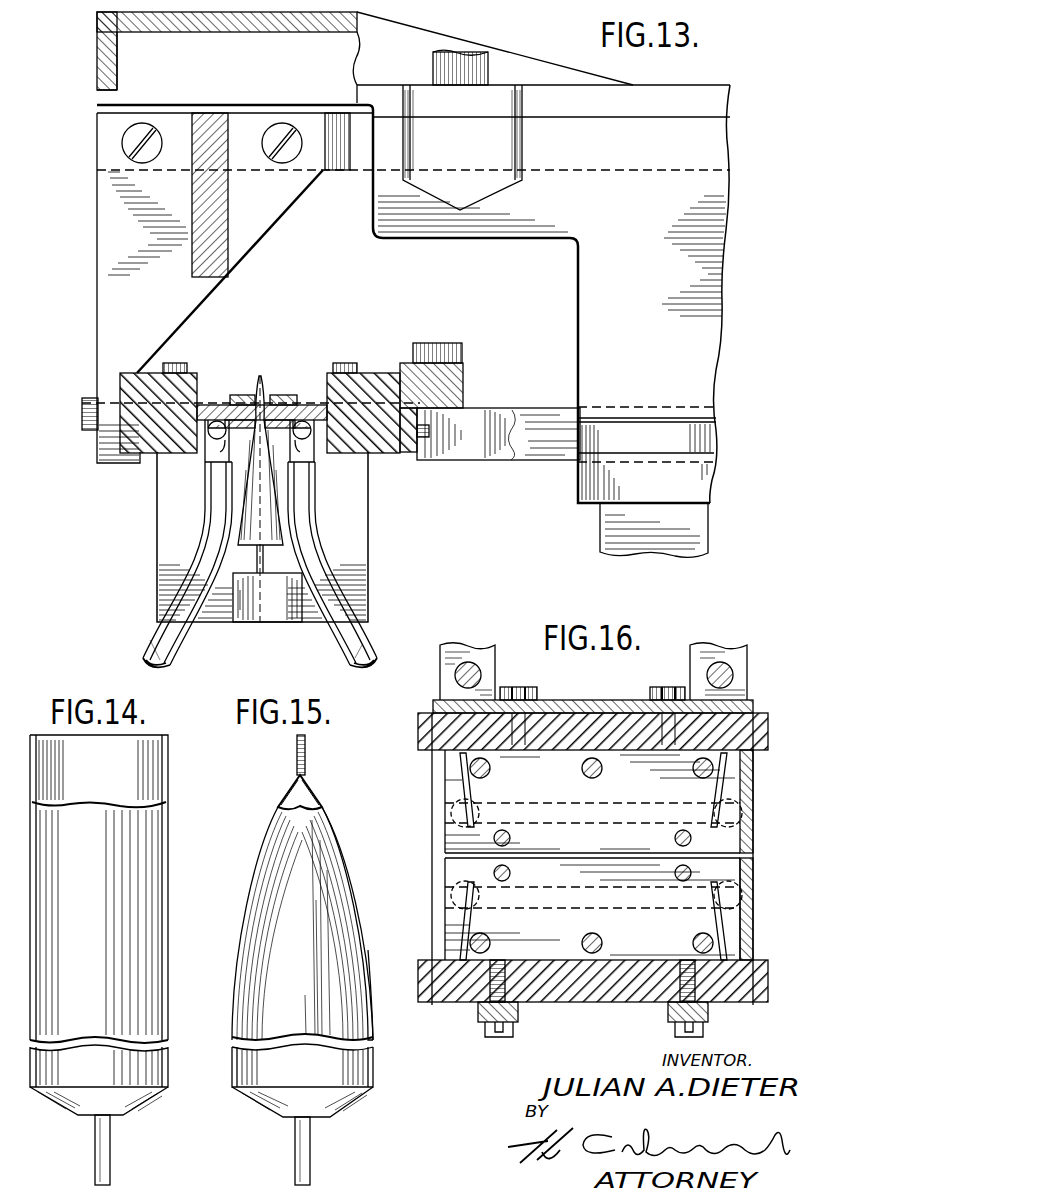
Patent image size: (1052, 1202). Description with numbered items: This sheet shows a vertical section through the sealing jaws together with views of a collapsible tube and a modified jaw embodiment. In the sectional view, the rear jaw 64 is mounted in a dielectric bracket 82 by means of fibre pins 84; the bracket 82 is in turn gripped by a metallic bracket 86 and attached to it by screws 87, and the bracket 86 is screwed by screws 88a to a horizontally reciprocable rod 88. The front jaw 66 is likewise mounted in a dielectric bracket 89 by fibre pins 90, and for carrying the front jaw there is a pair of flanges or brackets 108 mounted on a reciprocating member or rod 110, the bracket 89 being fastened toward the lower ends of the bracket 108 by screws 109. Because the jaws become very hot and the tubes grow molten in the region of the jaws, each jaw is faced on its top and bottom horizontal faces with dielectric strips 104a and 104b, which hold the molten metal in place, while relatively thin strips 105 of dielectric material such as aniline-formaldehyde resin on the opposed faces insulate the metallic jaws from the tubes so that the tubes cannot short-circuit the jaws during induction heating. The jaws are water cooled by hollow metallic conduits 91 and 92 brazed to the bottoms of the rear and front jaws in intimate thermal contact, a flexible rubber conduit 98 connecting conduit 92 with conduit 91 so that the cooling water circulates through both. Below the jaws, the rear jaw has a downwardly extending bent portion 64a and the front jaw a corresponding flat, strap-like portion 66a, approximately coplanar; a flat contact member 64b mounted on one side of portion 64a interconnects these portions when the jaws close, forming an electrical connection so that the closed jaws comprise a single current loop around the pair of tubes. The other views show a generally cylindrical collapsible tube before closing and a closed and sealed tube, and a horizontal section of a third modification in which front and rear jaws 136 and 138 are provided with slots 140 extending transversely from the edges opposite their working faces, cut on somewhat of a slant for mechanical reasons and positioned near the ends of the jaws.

In FIG. 13, the flanges or brackets 108 is at (107, 281).
In FIG. 13, the reciprocating member or rod 110 is at (338, 172).
In FIG. 13, the screws 109 is at (90, 398).
In FIG. 13, the dielectric bracket 89 is at (140, 373).
In FIG. 13, the fibre pins 90 is at (180, 364).
In FIG. 13, the dielectric bracket 82 is at (367, 373).
In FIG. 13, the fibre pins 84 is at (345, 364).
In FIG. 13, the metallic bracket 86 is at (460, 375).
In FIG. 13, the screws 88a is at (465, 358).
In FIG. 13, the screws 87 is at (430, 432).
In FIG. 13, the horizontally reciprocable rod 88 is at (500, 455).
In FIG. 13, the front jaw 66 is at (208, 404).
In FIG. 13, the rear jaw 64 is at (310, 404).
In FIG. 13, the upper dielectric strips 104a is at (292, 395).
In FIG. 13, the dielectric strips 105 is at (260, 383).
In FIG. 13, the lower dielectric strips 104b is at (296, 442).
In FIG. 13, the cooling conduit 92 is at (210, 500).
In FIG. 13, the cooling conduit 91 is at (308, 500).
In FIG. 13, the flexible conduit 98 is at (362, 645).
In FIG. 13, the bent portion of front jaw 66a is at (170, 540).
In FIG. 13, the bent portion of rear jaw 64a is at (355, 548).
In FIG. 13, the flat contact member 64b is at (275, 614).
In FIG. 16, the front jaw 136 is at (452, 786).
In FIG. 16, the rear jaw 138 is at (452, 918).
In FIG. 16, the slots 140 is at (722, 941).